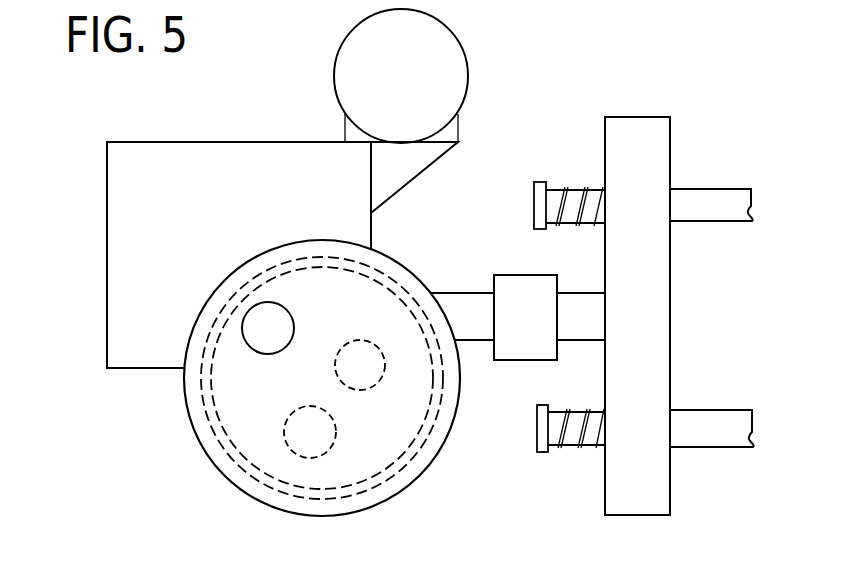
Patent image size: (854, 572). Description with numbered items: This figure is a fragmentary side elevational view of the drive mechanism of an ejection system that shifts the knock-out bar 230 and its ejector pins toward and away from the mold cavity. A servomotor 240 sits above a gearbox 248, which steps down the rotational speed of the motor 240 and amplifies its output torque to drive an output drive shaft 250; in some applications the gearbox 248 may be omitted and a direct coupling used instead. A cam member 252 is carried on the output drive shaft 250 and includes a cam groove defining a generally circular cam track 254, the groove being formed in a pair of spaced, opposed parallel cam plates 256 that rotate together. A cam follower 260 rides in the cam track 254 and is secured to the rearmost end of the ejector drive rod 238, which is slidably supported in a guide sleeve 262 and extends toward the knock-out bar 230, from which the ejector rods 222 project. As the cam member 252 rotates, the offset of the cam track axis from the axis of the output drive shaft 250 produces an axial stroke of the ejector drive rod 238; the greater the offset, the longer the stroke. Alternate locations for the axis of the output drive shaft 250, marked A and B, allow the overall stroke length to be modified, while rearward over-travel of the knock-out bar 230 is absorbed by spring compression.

The drive shaft 222 is at (703, 195).
The knock-out bar 230 is at (633, 132).
The ejector drive rod 238 is at (593, 322).
The servomotor 240 is at (420, 91).
The gearbox 248 is at (188, 211).
The output drive shaft 250 is at (273, 325).
The cam member 252 is at (150, 419).
The cam track 254 is at (402, 465).
The cam plates 256 is at (245, 482).
The cam follower 260 is at (380, 275).
The guide sleeve 262 is at (513, 287).
The alternate output drive shaft axis location A is at (353, 373).
The alternate output drive shaft axis location B is at (312, 420).